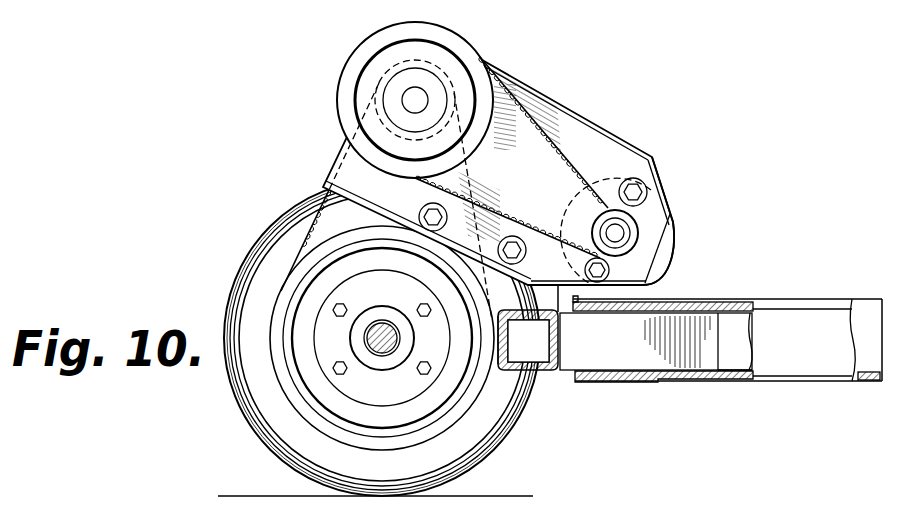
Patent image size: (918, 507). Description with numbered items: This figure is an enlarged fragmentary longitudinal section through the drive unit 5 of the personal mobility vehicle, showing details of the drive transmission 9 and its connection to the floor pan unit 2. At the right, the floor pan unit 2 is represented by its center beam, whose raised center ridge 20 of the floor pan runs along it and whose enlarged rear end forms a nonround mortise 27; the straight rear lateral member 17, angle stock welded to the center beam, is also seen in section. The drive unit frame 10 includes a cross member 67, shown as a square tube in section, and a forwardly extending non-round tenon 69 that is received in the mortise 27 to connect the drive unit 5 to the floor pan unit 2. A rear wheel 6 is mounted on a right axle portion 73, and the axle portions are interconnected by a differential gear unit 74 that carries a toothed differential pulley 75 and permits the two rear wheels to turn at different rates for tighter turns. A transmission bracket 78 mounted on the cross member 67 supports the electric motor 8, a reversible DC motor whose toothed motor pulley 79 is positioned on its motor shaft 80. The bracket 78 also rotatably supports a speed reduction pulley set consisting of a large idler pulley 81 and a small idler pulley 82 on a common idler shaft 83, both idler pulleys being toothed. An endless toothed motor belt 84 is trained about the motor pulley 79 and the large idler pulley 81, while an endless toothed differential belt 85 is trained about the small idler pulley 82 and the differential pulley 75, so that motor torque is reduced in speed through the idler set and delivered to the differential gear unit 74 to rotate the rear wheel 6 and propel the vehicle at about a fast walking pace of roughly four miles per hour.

The floor pan unit 2 is at (805, 385).
The drive unit 5 is at (294, 204).
The rear wheel 6 is at (238, 276).
The electric motor 8 is at (663, 269).
The transmission 9 is at (591, 124).
The drive unit frame 10 is at (506, 378).
The rear lateral member 17 is at (648, 382).
The raised center ridge 20 is at (788, 300).
The mortise 27 is at (737, 382).
The cross member 67 is at (543, 372).
The tenon 69 is at (715, 351).
The right axle portion 73 is at (388, 324).
The differential gear unit 74 is at (388, 407).
The differential pulley 75 is at (303, 262).
The transmission bracket 78 is at (633, 158).
The motor pulley 79 is at (641, 220).
The motor shaft 80 is at (617, 234).
The large idler pulley 81 is at (355, 53).
The small idler pulley 82 is at (402, 126).
The idler shaft 83 is at (418, 109).
The motor belt 84 is at (565, 157).
The differential belt 85 is at (323, 224).